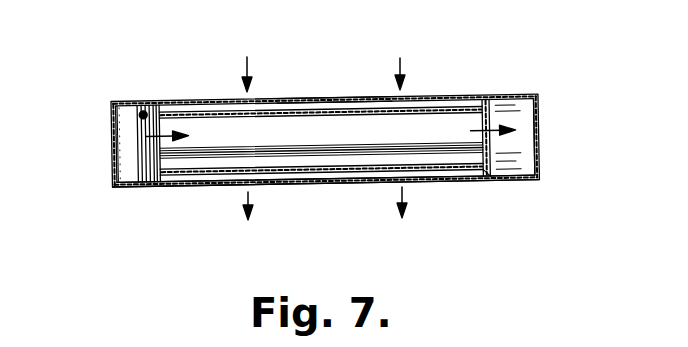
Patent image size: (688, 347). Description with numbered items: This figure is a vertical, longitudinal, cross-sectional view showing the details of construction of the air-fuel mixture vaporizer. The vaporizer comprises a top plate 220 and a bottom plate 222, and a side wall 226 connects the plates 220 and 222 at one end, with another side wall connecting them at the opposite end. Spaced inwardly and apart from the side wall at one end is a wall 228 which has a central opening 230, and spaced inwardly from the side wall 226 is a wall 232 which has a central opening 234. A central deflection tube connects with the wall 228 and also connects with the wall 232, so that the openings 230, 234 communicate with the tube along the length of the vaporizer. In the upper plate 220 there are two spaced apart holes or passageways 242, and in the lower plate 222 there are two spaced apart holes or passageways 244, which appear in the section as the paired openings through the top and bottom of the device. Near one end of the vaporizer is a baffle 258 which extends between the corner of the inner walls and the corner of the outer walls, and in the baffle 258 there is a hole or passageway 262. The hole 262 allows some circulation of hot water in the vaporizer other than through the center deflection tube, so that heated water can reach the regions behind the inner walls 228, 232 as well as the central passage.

The top plate 220 is at (467, 95).
The bottom plate 222 is at (463, 182).
The side wall 226 is at (540, 108).
The wall 228 is at (145, 188).
The central opening 230 is at (113, 117).
The wall 232 is at (500, 182).
The central opening 234 is at (490, 153).
The holes or passageways 242 is at (392, 97).
The holes or passageways 244 is at (385, 185).
The baffle 258 is at (128, 145).
The hole or passageway 262 is at (147, 111).